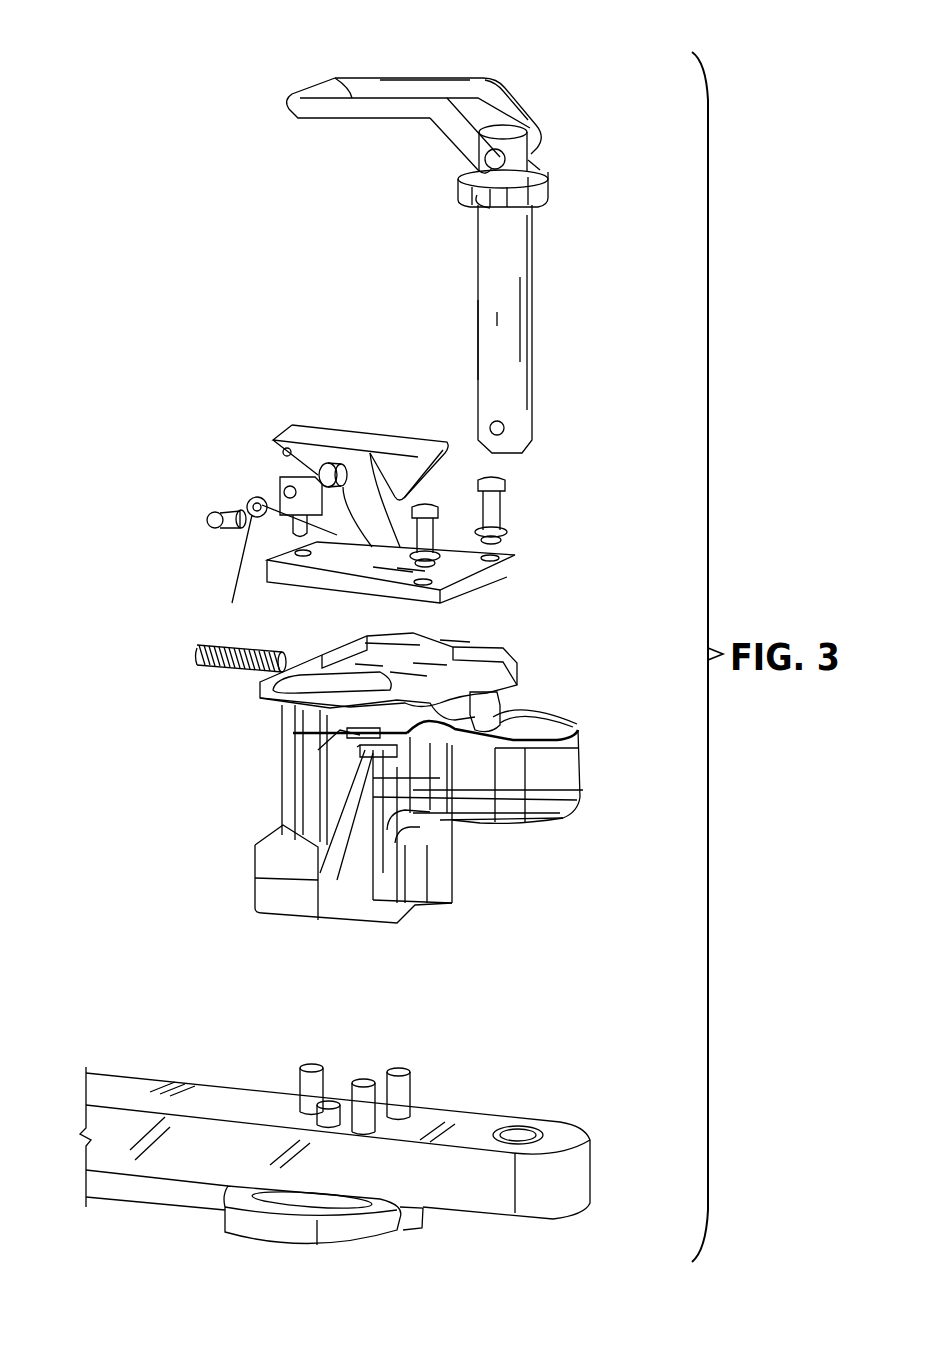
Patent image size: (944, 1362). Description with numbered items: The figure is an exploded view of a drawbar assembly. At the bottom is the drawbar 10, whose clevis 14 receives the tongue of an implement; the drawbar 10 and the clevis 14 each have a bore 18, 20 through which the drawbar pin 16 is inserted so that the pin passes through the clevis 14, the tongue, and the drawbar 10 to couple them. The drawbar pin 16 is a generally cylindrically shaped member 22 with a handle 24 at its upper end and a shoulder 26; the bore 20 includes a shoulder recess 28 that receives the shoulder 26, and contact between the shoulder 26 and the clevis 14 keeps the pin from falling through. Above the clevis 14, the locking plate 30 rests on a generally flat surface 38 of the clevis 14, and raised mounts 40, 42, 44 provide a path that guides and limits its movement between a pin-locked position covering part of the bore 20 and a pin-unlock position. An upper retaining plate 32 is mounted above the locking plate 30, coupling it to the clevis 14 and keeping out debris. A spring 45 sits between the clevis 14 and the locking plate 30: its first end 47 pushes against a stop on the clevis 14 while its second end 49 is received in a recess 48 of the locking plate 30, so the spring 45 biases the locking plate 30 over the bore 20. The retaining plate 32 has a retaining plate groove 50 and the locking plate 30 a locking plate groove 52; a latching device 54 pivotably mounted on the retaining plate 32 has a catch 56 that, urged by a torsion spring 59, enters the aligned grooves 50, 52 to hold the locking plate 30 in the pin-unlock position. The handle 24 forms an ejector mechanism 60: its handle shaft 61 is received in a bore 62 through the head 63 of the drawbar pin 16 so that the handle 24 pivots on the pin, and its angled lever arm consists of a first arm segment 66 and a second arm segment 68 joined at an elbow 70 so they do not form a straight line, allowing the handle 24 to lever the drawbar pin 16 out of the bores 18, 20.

The drawbar 10 is at (470, 1213).
The clevis 14 is at (590, 770).
The drawbar pin 16 is at (533, 287).
The bore 18 is at (545, 1130).
The bore 20 is at (543, 723).
The cylindrically shaped member 22 is at (478, 335).
The handle 24 is at (510, 98).
The shoulder 26 is at (555, 183).
The shoulder recess 28 is at (510, 733).
The locking plate 30 is at (510, 660).
The upper retaining plate 32 is at (520, 555).
The flat surface 38 is at (340, 727).
The raised mount 40 is at (500, 730).
The raised mount 42 is at (437, 737).
The raised mount 44 is at (275, 703).
The spring 45 is at (218, 645).
The first end 47 is at (205, 665).
The recess 48 is at (345, 660).
The second end 49 is at (277, 653).
The retaining plate groove 50 is at (283, 478).
The locking plate groove 52 is at (462, 597).
The latching device 54 is at (378, 440).
The catch 56 is at (452, 476).
The torsion spring 59 is at (252, 500).
The ejector mechanism 60 is at (598, 165).
The handle shaft 61 is at (478, 195).
The bore 62 is at (545, 185).
The head 63 is at (535, 163).
The first arm segment 66 is at (438, 138).
The second arm segment 68 is at (440, 78).
The elbow 70 is at (487, 82).